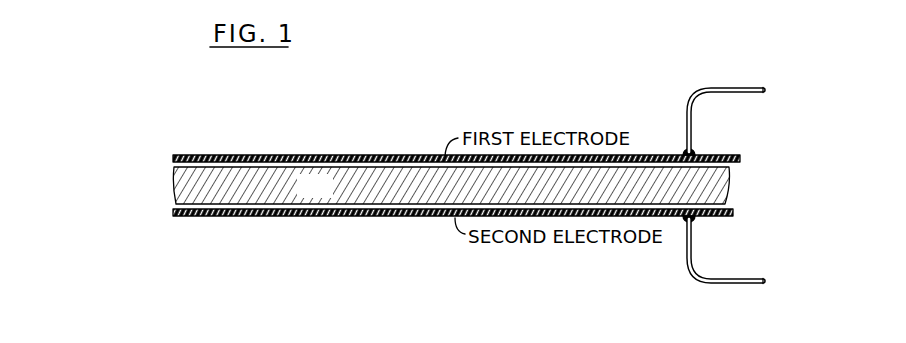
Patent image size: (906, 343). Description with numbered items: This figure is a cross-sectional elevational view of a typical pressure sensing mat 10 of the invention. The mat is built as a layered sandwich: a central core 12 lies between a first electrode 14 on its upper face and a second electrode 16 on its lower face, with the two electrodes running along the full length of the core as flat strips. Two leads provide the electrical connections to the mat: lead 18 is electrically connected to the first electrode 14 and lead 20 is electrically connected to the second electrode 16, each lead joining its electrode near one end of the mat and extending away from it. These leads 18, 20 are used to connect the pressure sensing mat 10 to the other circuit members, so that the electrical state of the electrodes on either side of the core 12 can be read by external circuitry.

The pressure sensing mat 10 is at (172, 229).
The core 12 is at (330, 195).
The first electrode 14 is at (363, 156).
The second electrode 16 is at (440, 217).
The lead 18 is at (697, 94).
The lead 20 is at (699, 276).